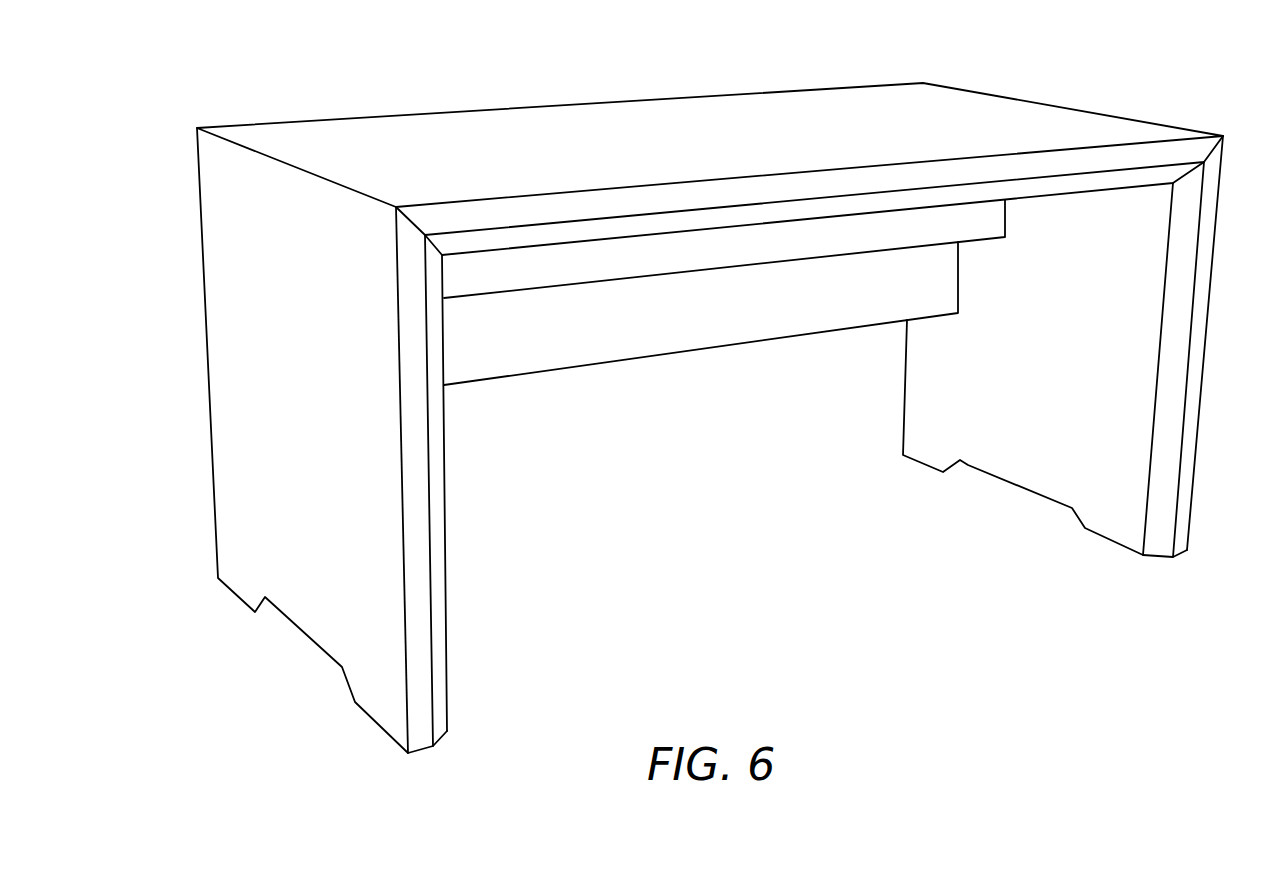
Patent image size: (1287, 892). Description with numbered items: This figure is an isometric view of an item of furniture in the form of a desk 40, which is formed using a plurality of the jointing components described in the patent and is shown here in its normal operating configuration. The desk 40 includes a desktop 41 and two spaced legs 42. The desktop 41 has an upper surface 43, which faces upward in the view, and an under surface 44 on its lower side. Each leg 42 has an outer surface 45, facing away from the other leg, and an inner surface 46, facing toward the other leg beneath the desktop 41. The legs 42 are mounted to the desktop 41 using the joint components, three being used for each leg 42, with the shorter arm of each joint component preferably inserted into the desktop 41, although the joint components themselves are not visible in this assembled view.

The desk 40 is at (797, 606).
The desktop 41 is at (639, 100).
The leg 42 is at (209, 415).
The upper surface 43 is at (639, 152).
The under surface 44 is at (817, 218).
The outer surface 45 is at (292, 409).
The inner surface 46 is at (1043, 345).